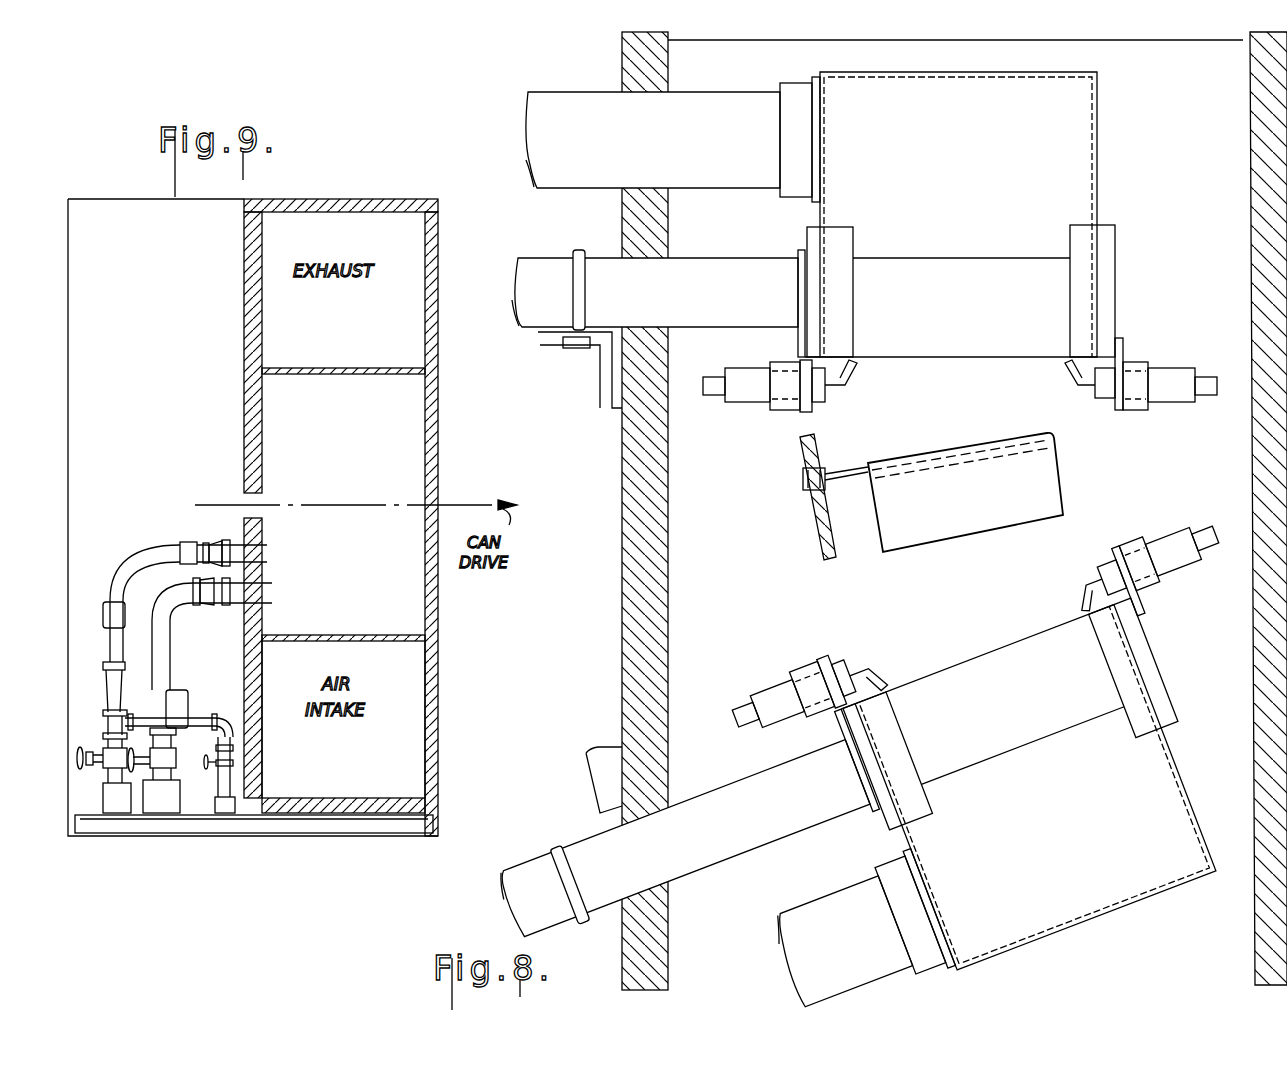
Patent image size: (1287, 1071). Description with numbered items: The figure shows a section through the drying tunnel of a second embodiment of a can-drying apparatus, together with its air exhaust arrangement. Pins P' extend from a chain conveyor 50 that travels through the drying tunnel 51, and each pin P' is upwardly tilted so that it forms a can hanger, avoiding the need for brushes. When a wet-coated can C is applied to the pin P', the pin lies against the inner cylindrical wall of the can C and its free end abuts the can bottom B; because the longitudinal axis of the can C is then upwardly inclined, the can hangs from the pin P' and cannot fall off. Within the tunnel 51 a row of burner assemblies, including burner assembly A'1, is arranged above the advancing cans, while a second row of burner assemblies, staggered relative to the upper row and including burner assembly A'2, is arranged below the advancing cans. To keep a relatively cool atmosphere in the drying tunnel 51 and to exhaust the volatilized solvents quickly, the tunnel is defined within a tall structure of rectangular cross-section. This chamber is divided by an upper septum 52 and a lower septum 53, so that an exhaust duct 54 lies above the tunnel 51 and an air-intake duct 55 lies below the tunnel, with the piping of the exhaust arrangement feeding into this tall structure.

In FIG. 8, the chain conveyor 50 is at (801, 486).
In FIG. 9, the drying tunnel 51 is at (413, 451).
In FIG. 8, the drying tunnel 51 is at (697, 651).
In FIG. 9, the upper septum 52 is at (388, 374).
In FIG. 9, the lower septum 53 is at (388, 634).
In FIG. 9, the exhaust duct 54 is at (247, 331).
In FIG. 9, the air-intake duct 55 is at (412, 745).
In FIG. 8, the burner assembly A'1 is at (960, 242).
In FIG. 8, the burner assembly A'2 is at (1006, 761).
In FIG. 8, the pin P' is at (847, 445).
In FIG. 8, the can bottom B is at (1053, 452).
In FIG. 8, the can C is at (1048, 485).